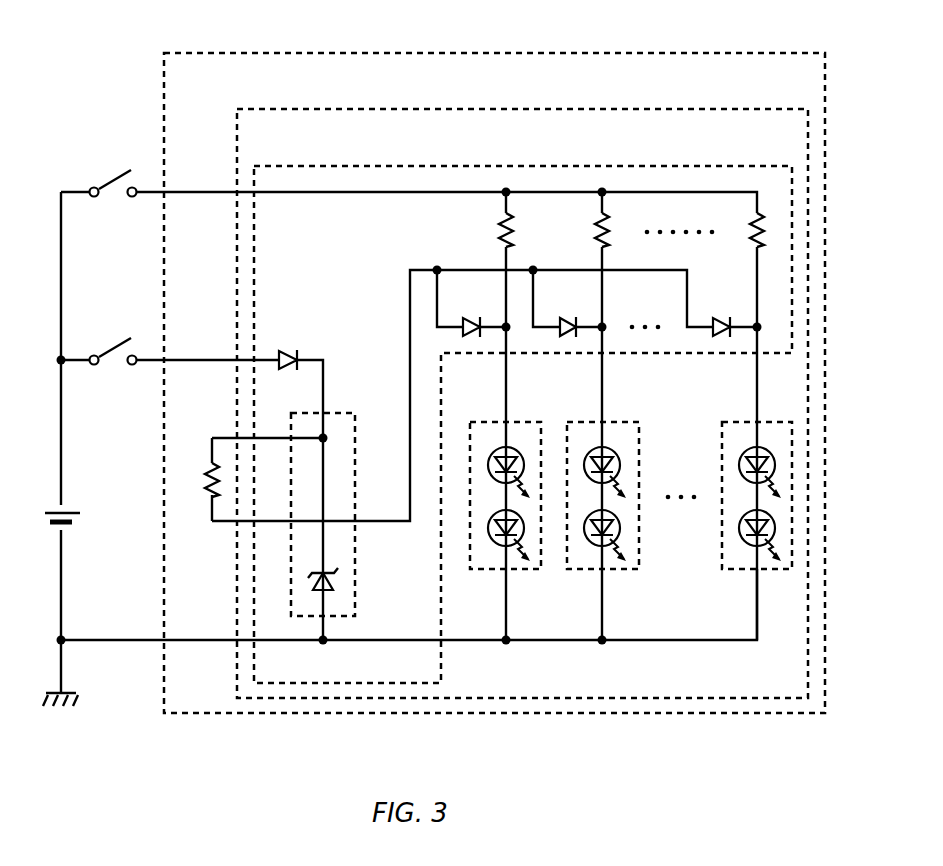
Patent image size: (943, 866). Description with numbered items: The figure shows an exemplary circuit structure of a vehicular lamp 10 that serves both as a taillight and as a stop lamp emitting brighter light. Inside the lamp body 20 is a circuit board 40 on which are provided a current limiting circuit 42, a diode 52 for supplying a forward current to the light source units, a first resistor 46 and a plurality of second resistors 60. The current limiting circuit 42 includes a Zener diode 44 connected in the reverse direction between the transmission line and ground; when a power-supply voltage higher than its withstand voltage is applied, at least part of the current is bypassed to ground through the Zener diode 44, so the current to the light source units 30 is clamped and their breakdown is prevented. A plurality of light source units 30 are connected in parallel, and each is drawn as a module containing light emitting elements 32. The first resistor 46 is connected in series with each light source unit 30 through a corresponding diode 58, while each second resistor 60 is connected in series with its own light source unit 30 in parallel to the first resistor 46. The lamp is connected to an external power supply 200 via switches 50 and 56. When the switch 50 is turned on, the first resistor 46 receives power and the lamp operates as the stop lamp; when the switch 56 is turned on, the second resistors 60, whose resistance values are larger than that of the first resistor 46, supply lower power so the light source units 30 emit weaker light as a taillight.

The vehicular lamp 10 is at (495, 53).
The lamp body 20 is at (495, 109).
The circuit board 40 is at (523, 166).
The light source unit 30 is at (526, 570).
The light emitting diode 32 is at (517, 450).
The current limiting circuit 42 is at (355, 548).
The Zener diode 44 is at (334, 580).
The first resistor 46 is at (205, 470).
The switch 50 is at (112, 345).
The diode 52 is at (283, 352).
The switch 56 is at (108, 198).
The diode 58 is at (468, 318).
The second resistor 60 is at (499, 229).
The power supply 200 is at (52, 510).